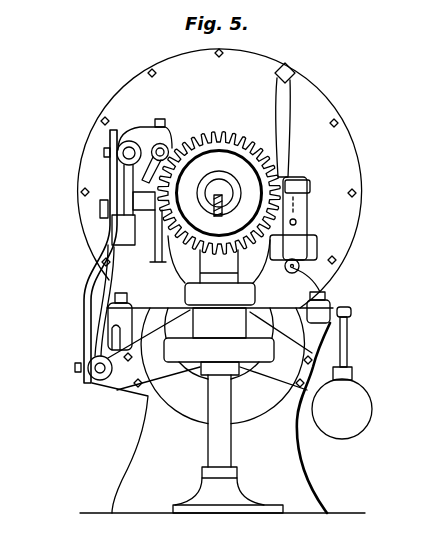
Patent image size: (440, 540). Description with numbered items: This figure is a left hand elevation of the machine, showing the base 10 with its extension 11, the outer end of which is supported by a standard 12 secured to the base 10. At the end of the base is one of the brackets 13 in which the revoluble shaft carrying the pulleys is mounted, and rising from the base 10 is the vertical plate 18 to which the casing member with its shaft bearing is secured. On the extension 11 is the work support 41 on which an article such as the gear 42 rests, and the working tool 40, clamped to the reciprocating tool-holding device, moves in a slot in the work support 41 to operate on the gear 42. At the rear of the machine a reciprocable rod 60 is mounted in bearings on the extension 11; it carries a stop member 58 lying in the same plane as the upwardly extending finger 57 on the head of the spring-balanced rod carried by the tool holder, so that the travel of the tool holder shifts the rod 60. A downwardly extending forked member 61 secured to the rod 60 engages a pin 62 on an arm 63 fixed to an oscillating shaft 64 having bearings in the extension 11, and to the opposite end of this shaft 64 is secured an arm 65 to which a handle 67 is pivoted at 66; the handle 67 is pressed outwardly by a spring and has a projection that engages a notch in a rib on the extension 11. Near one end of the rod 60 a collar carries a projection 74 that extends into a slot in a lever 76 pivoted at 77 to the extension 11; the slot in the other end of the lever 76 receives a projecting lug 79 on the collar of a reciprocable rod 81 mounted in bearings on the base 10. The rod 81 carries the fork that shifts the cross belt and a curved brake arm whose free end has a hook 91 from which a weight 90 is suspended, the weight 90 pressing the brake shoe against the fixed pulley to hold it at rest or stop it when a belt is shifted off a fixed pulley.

The base 10 is at (297, 473).
The extension 11 is at (190, 392).
The standard 12 is at (224, 442).
The bracket 13 is at (126, 390).
The vertical plate 18 is at (259, 62).
The working tool 40 is at (217, 213).
The work support 41 is at (217, 190).
The gear 42 is at (227, 140).
The finger 57 is at (160, 120).
The stop member 58 is at (166, 130).
The reciprocable rod 60 is at (128, 150).
The forked member 61 is at (132, 181).
The pin 62 is at (113, 222).
The arm 63 is at (145, 207).
The oscillating shaft 64 is at (160, 253).
The arm 65 is at (307, 203).
The pivot 66 is at (296, 222).
The handle 67 is at (282, 93).
The projection 74 is at (105, 152).
The lever 76 is at (109, 168).
The pivot 77 is at (101, 210).
The projecting lug 79 is at (75, 367).
The reciprocable rod 81 is at (94, 388).
The weight 90 is at (362, 407).
The hook 91 is at (350, 317).